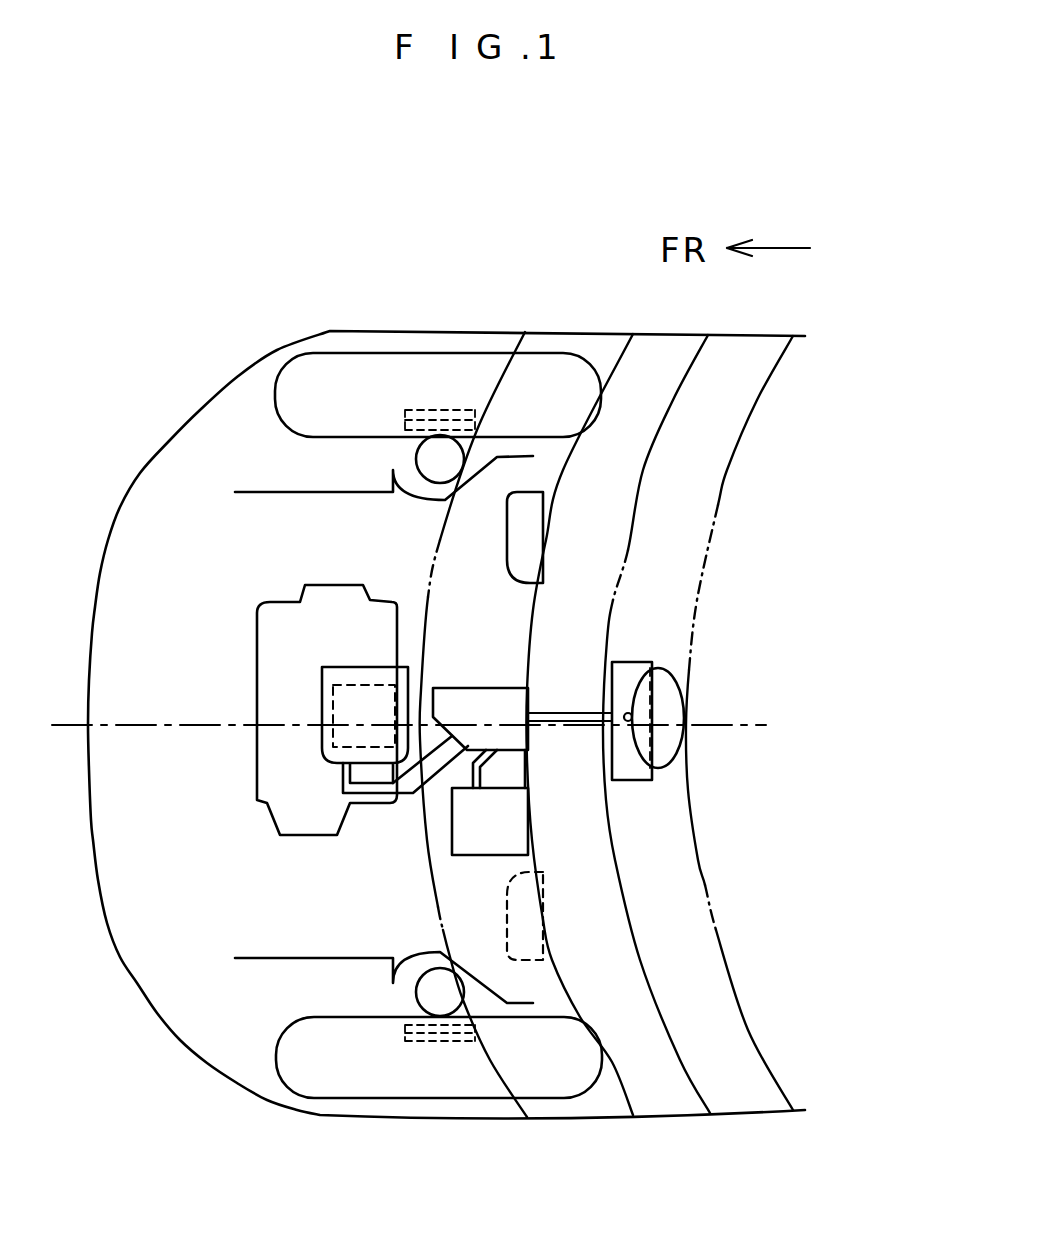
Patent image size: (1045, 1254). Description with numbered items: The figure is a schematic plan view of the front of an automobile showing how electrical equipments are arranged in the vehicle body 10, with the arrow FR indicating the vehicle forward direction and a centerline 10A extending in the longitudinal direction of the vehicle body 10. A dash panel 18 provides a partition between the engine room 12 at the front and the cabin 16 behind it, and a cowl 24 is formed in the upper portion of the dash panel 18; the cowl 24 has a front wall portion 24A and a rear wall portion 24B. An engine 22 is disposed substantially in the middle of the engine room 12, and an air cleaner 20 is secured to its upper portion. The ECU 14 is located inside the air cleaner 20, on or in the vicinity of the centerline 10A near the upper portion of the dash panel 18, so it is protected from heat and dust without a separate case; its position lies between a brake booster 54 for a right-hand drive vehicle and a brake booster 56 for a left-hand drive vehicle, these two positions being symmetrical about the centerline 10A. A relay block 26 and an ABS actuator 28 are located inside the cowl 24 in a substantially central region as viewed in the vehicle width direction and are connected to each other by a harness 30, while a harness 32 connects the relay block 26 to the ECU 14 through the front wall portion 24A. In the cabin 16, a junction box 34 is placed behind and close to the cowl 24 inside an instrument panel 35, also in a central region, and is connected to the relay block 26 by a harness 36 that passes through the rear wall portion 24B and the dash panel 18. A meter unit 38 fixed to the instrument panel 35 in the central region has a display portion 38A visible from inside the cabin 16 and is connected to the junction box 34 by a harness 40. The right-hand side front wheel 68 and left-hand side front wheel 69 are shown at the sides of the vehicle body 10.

The vehicle body 10 is at (151, 397).
The centerline 10A is at (120, 722).
The engine room 12 is at (308, 927).
The ECU 14 is at (347, 708).
The cabin 16 is at (758, 814).
The dash panel 18 is at (553, 473).
The air cleaner 20 is at (353, 667).
The engine 22 is at (267, 803).
The cowl 24 is at (697, 297).
The front wall portion 24A is at (495, 401).
The rear wall portion 24B is at (674, 405).
The relay block 26 is at (480, 703).
The ABS actuator 28 is at (480, 837).
The harness 30 is at (526, 803).
The harness 32 is at (405, 800).
The junction box 34 is at (628, 660).
The instrument panel 35 is at (716, 494).
The harness 36 is at (547, 714).
The meter unit 38 is at (666, 780).
The display portion 38A is at (668, 712).
The harness 40 is at (629, 713).
The brake booster 54 is at (523, 547).
The brake booster 56 is at (532, 912).
The right-hand side front wheel 68 is at (312, 366).
The left-hand side front wheel 69 is at (307, 1023).